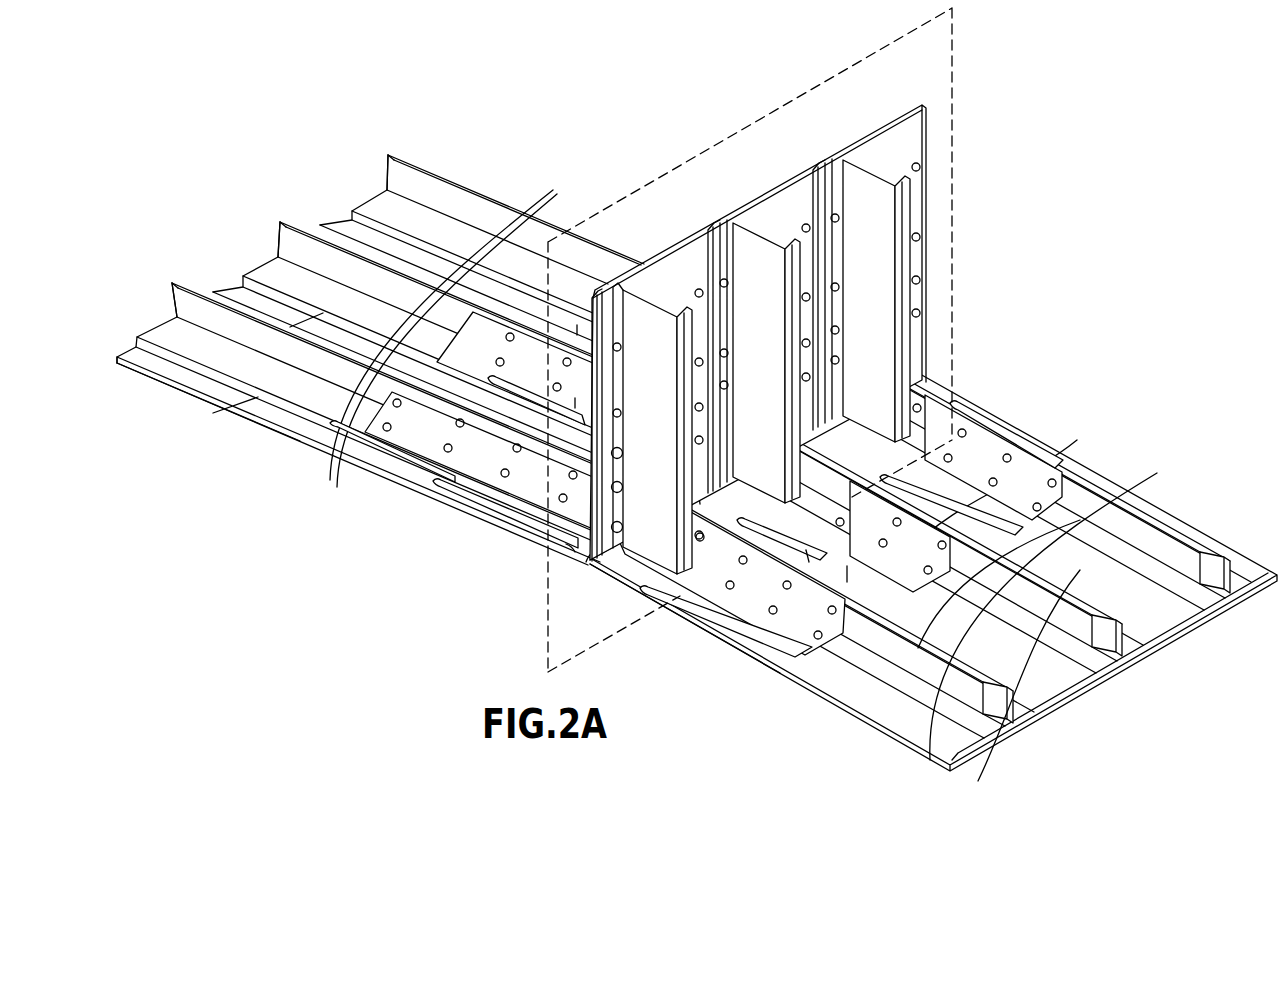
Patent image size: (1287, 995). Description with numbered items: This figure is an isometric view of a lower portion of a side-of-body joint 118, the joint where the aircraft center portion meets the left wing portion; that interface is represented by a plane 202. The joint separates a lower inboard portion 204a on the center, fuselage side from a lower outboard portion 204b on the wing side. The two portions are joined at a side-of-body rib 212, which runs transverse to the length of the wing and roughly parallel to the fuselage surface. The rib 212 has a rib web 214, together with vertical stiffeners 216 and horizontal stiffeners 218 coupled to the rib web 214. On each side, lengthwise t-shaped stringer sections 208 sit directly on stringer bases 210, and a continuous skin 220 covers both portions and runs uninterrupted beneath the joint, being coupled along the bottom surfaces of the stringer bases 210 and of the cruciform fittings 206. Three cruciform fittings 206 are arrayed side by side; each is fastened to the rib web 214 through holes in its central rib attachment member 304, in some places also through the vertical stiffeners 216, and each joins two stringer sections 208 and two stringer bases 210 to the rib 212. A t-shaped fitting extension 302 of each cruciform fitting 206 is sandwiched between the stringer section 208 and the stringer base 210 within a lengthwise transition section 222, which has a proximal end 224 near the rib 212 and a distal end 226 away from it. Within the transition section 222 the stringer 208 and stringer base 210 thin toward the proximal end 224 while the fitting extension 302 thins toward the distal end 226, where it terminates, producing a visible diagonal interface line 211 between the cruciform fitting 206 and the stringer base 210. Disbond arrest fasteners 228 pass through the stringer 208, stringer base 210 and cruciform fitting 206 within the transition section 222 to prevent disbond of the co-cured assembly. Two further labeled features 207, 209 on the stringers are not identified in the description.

The side-of-body joint 118 is at (678, 419).
The interface 202 is at (952, 88).
The lower inboard portion 204a is at (800, 745).
The lower outboard portion 204b is at (268, 490).
The cruciform fitting 206 is at (595, 560).
The stringer flange 207 is at (360, 210).
The t-shaped stringer section 208 is at (338, 489).
The stringer cap 209 is at (388, 156).
The stringer base 210 is at (450, 180).
The diagonal interface line 211 is at (440, 466).
The side-of-body rib 212 is at (832, 336).
The rib web 214 is at (912, 198).
The vertical stiffener 216 is at (800, 277).
The horizontal stiffener 218 is at (578, 402).
The skin 220 is at (150, 362).
The transition section 222 is at (808, 556).
The proximal end 224 is at (698, 492).
The distal end 226 is at (847, 575).
The disbond arrest fastener 228 is at (1053, 480).
The t-shaped fitting extension 302 is at (452, 480).
The central rib attachment member 304 is at (571, 547).